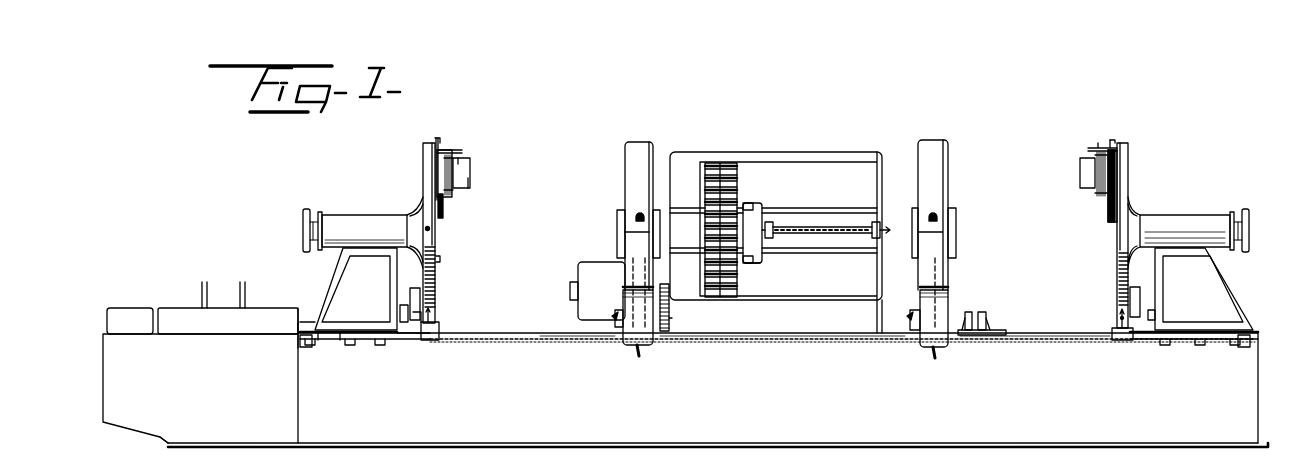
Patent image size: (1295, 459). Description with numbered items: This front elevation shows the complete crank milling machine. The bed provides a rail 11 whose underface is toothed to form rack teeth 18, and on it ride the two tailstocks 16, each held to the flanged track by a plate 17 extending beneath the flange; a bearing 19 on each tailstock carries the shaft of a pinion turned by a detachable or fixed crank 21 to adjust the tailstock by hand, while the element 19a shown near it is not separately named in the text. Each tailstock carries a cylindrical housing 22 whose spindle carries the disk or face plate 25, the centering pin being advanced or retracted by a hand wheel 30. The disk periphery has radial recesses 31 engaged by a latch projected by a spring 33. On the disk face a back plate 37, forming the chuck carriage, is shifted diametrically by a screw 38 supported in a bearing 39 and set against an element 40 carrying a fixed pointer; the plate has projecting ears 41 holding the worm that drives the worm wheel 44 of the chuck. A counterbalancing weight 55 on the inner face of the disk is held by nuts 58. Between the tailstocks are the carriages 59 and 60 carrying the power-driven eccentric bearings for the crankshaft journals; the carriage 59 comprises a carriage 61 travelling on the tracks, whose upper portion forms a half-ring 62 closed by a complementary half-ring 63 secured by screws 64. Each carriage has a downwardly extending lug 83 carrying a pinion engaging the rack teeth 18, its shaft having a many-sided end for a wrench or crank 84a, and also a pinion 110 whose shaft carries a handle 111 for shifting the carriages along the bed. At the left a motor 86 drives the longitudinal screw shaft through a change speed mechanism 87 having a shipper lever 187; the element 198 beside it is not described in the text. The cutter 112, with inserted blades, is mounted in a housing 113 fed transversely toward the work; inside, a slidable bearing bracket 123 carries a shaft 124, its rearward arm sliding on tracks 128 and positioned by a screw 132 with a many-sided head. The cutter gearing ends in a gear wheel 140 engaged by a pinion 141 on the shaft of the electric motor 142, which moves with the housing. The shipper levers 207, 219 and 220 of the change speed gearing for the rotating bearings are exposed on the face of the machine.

The rail 11 is at (494, 333).
The tailstock 16 is at (786, 296).
The plate 17 is at (374, 346).
The rack teeth 18 is at (1008, 341).
The bearing 19 is at (306, 352).
The bracket foot 19a is at (330, 365).
The crank 21 is at (1240, 350).
The cylindrical housing 22 is at (367, 222).
The disk or face plate 25 is at (428, 144).
The hand wheel 30 is at (303, 214).
The radial recesses 31 is at (433, 229).
The spring 33 is at (151, 447).
The back plate 37 is at (447, 150).
The screw 38 is at (445, 211).
The bearing 39 is at (438, 268).
The element carrying fixed pointer 40 is at (441, 258).
The ears 41 is at (470, 181).
The worm wheel 44 is at (452, 160).
The weight 55 is at (1140, 310).
The nuts 58 is at (412, 291).
The carriage 59 is at (947, 136).
The carriage 60 is at (654, 137).
The carriage 61 is at (938, 242).
The half-ring 62 is at (630, 245).
The complementary half-ring 63 is at (933, 170).
The screws 64 is at (639, 216).
The lug 83 is at (628, 335).
The wrench or crank 84a is at (936, 349).
The motor 86 is at (130, 316).
The change speed mechanism 87 is at (200, 375).
The pinion 110 is at (920, 304).
The handle 111 is at (912, 316).
The cutter 112 is at (722, 162).
The housing 113 is at (813, 147).
The bearing bracket 123 is at (751, 263).
The shaft 124 is at (747, 200).
The tracks 128 is at (847, 252).
The screw 132 is at (812, 236).
The gear wheel 140 is at (672, 318).
The pinion 141 is at (665, 291).
The electric motor 142 is at (565, 284).
The shipper lever 187 is at (207, 283).
The pin 198 is at (247, 283).
The operating handle 207 is at (969, 318).
The handle 219 is at (986, 318).
The handle 220 is at (986, 323).